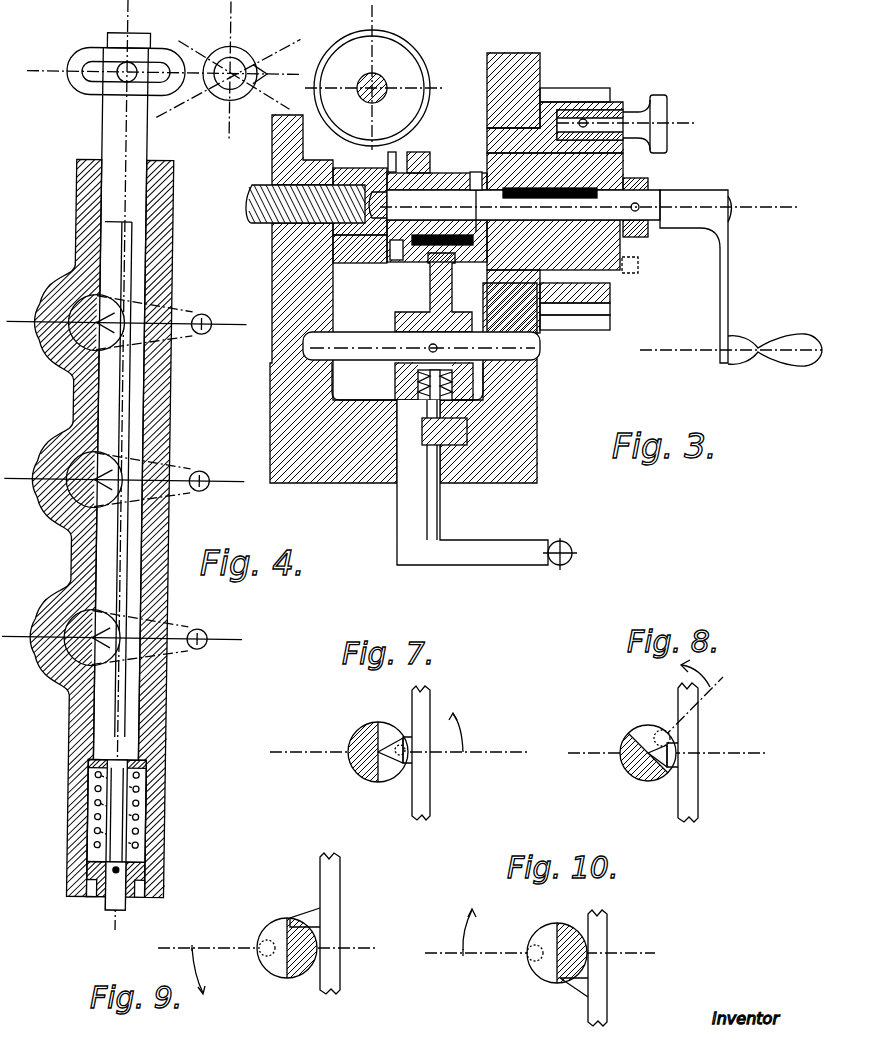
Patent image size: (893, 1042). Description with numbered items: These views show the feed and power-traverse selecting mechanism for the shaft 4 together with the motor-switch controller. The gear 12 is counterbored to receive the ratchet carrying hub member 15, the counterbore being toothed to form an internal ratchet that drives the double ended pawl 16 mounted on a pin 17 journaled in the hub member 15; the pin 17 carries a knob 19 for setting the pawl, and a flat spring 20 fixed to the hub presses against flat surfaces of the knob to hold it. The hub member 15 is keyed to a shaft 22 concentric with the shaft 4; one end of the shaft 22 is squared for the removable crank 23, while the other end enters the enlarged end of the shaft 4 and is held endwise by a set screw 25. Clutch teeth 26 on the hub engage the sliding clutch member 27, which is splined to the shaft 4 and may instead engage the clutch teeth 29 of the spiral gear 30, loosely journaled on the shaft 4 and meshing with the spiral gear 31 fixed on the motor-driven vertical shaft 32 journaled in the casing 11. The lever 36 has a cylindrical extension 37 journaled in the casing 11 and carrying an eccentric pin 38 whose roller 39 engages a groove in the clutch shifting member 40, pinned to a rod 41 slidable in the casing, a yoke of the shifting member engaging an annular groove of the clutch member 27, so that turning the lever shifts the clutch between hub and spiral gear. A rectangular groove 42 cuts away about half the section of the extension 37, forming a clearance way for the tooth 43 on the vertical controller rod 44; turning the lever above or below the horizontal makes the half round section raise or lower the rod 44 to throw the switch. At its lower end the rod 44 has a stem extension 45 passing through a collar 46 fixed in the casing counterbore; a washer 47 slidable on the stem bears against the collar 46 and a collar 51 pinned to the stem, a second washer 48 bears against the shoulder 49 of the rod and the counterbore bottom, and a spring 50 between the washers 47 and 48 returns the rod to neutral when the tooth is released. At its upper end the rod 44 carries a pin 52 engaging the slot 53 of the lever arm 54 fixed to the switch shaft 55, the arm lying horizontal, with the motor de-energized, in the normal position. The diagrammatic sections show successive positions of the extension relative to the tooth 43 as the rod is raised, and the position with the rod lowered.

In FIG. 3, the shaft 4 is at (256, 186).
In FIG. 3, the casing 11 is at (520, 450).
In FIG. 4, the casing 11 is at (165, 388).
In FIG. 3, the gear 12 is at (552, 90).
In FIG. 3, the hub member 15 is at (605, 163).
In FIG. 3, the double ended pawl 16 is at (600, 110).
In FIG. 3, the pin 17 is at (590, 118).
In FIG. 3, the knob 19 is at (666, 112).
In FIG. 3, the flat spring 20 is at (630, 173).
In FIG. 3, the shaft 22 is at (638, 212).
In FIG. 3, the removable crank 23 is at (726, 292).
In FIG. 3, the set screw 25 is at (476, 172).
In FIG. 3, the clutch teeth 26 is at (470, 204).
In FIG. 3, the sliding clutch member 27 is at (422, 158).
In FIG. 3, the clutch teeth 29 is at (395, 262).
In FIG. 3, the spiral gear 30 is at (365, 262).
In FIG. 3, the spiral gear 31 is at (402, 60).
In FIG. 3, the vertical shaft 32 is at (385, 82).
In FIG. 3, the lever 36 is at (490, 548).
In FIG. 4, the lever 36 is at (190, 315).
In FIG. 7, the lever 36 is at (400, 744).
In FIG. 8, the lever 36 is at (666, 706).
In FIG. 9, the lever 36 is at (266, 969).
In FIG. 10, the lever 36 is at (540, 932).
In FIG. 3, the cylindrical extension 37 is at (402, 508).
In FIG. 4, the cylindrical extension 37 is at (52, 466).
In FIG. 7, the cylindrical extension 37 is at (350, 760).
In FIG. 8, the cylindrical extension 37 is at (625, 735).
In FIG. 9, the cylindrical extension 37 is at (294, 978).
In FIG. 10, the cylindrical extension 37 is at (560, 925).
In FIG. 3, the eccentric pin 38 is at (455, 383).
In FIG. 4, the eccentric pin 38 is at (120, 468).
In FIG. 7, the eccentric pin 38 is at (399, 744).
In FIG. 8, the eccentric pin 38 is at (660, 731).
In FIG. 9, the eccentric pin 38 is at (262, 942).
In FIG. 10, the eccentric pin 38 is at (531, 947).
In FIG. 3, the roller 39 is at (395, 382).
In FIG. 3, the clutch shifting member 40 is at (420, 316).
In FIG. 3, the rod 41 is at (356, 340).
In FIG. 3, the rectangular groove 42 is at (425, 448).
In FIG. 4, the rectangular groove 42 is at (108, 462).
In FIG. 7, the rectangular groove 42 is at (387, 774).
In FIG. 8, the rectangular groove 42 is at (660, 772).
In FIG. 9, the rectangular groove 42 is at (272, 964).
In FIG. 10, the rectangular groove 42 is at (540, 968).
In FIG. 4, the tooth 43 is at (110, 490).
In FIG. 7, the tooth 43 is at (406, 752).
In FIG. 8, the tooth 43 is at (670, 753).
In FIG. 9, the tooth 43 is at (306, 915).
In FIG. 10, the tooth 43 is at (570, 983).
In FIG. 3, the controller rod 44 is at (470, 432).
In FIG. 4, the controller rod 44 is at (140, 510).
In FIG. 7, the controller rod 44 is at (418, 780).
In FIG. 8, the controller rod 44 is at (688, 779).
In FIG. 9, the controller rod 44 is at (326, 935).
In FIG. 10, the controller rod 44 is at (595, 1000).
In FIG. 4, the stem extension 45 is at (138, 806).
In FIG. 4, the collar 46 is at (150, 878).
In FIG. 4, the washer 47 is at (98, 862).
In FIG. 4, the washer 48 is at (150, 765).
In FIG. 4, the shoulder 49 is at (98, 762).
In FIG. 4, the spring 50 is at (104, 810).
In FIG. 4, the collar 51 is at (100, 884).
In FIG. 4, the pin 52 is at (117, 63).
In FIG. 4, the slot 53 is at (95, 80).
In FIG. 4, the lever arm 54 is at (152, 55).
In FIG. 4, the switch shaft 55 is at (238, 64).